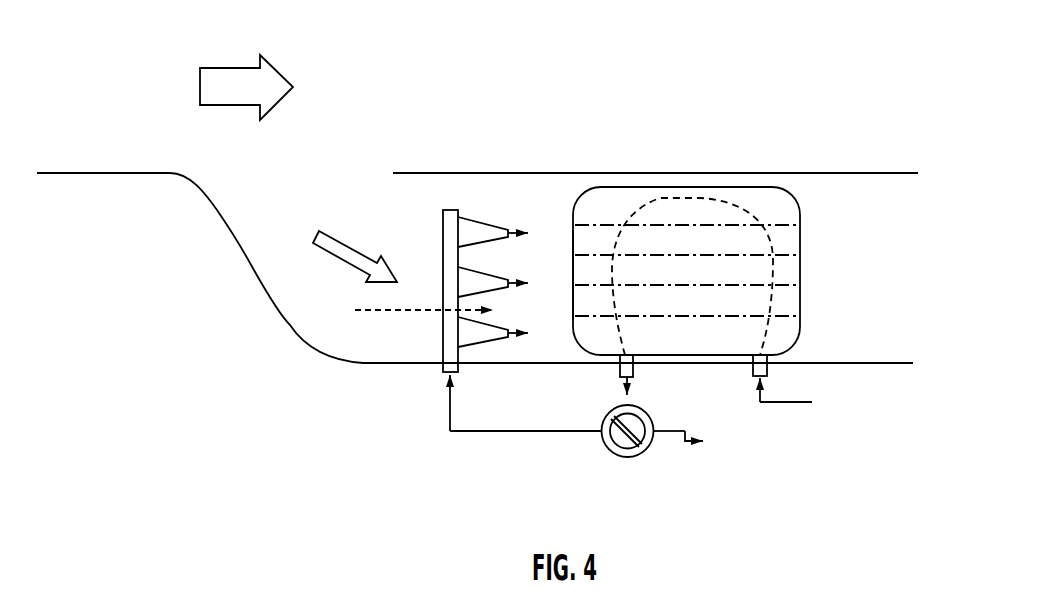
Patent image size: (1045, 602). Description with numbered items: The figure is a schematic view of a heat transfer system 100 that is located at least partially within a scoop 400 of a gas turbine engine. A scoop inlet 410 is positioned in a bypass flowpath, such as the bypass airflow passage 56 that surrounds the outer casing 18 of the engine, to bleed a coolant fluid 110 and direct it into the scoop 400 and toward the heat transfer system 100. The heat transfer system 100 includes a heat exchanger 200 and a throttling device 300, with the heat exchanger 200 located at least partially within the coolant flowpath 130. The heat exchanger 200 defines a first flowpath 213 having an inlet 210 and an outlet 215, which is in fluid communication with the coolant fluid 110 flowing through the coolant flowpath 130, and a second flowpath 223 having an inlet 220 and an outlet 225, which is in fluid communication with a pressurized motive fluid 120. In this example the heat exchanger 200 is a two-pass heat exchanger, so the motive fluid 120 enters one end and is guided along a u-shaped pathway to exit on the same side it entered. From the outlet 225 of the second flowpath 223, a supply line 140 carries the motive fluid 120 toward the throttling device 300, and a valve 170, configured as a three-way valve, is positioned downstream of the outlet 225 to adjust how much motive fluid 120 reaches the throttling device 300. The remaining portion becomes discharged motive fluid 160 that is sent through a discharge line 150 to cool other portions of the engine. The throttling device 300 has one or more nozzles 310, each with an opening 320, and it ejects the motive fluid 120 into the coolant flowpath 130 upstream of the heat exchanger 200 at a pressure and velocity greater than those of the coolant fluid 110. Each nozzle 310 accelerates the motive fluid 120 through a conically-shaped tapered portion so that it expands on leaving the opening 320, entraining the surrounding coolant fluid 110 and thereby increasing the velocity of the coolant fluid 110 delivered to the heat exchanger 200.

The outer casing 18 is at (893, 173).
The bypass airflow passage 56 is at (65, 165).
The heat transfer system 100 is at (783, 160).
The coolant fluid 110 is at (212, 88).
The motive fluid 120 is at (523, 331).
The coolant flowpath 130 is at (425, 308).
The supply line 140 is at (450, 415).
The discharge line 150 is at (686, 443).
The discharged motive fluid 160 is at (660, 433).
The valve 170 is at (614, 453).
The heat exchanger 200 is at (612, 187).
The inlet of first flowpath 210 is at (573, 238).
The first flowpath 213 is at (784, 251).
The outlet of first flowpath 215 is at (806, 290).
The inlet of second flowpath 220 is at (783, 371).
The second flowpath 223 is at (670, 194).
The outlet of second flowpath 225 is at (611, 372).
The throttling device 300 is at (450, 336).
The nozzles 310 is at (459, 247).
The openings 320 is at (512, 229).
The scoop 400 is at (305, 342).
The scoop inlet 410 is at (217, 185).